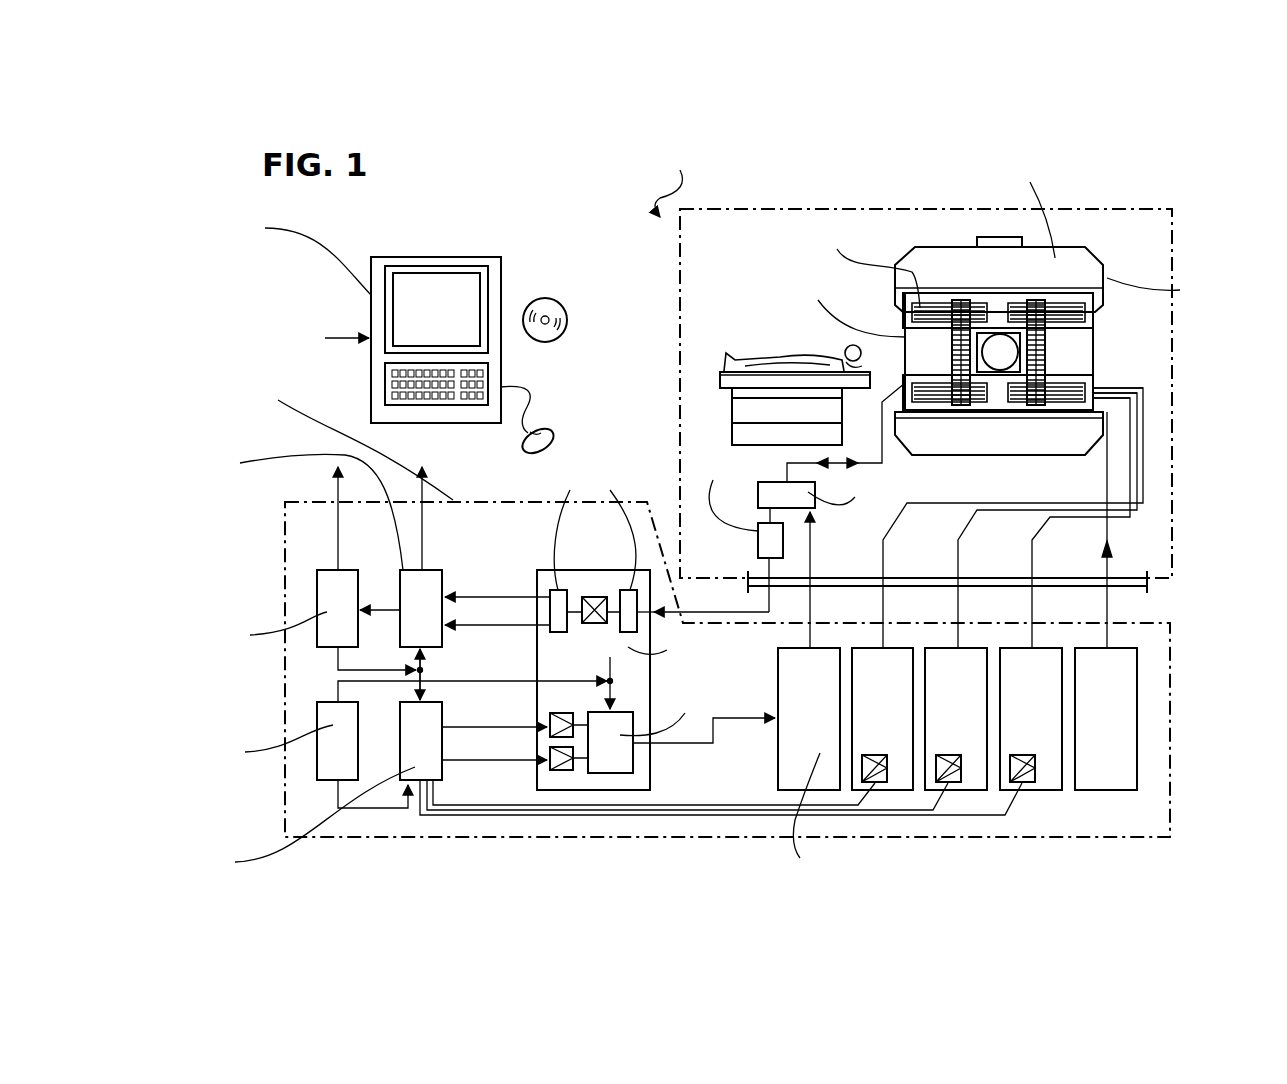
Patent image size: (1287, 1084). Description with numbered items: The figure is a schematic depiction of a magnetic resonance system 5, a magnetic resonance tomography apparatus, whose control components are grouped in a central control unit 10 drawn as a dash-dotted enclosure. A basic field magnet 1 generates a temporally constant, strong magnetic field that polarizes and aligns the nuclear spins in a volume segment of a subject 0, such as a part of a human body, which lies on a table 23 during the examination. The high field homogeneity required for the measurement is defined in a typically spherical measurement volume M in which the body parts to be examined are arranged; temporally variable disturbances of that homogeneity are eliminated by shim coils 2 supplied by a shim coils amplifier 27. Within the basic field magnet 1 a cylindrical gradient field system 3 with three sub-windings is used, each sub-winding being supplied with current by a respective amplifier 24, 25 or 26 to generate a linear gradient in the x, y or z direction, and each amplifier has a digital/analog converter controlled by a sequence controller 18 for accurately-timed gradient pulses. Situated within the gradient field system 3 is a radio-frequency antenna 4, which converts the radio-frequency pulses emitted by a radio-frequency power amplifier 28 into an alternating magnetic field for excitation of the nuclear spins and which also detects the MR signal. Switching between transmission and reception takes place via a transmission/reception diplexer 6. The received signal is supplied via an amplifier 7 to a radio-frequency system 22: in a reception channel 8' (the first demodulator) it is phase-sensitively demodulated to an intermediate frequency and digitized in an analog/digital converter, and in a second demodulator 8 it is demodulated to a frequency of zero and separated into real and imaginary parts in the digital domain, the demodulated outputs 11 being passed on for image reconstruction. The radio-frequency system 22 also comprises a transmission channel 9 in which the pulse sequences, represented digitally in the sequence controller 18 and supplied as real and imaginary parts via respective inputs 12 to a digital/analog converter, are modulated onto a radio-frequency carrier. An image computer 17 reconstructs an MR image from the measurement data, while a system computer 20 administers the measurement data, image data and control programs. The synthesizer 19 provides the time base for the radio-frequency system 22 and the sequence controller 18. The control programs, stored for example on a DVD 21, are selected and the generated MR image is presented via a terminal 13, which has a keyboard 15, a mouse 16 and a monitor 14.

The subject 0 is at (806, 353).
The basic field magnet 1 is at (1085, 268).
The shim coils 2 is at (1093, 288).
The gradient field system 3 is at (905, 313).
The radio-frequency antenna 4 is at (973, 362).
The magnetic resonance system 5 is at (637, 249).
The transmission/reception diplexer 6 is at (758, 493).
The amplifier 7 is at (758, 530).
The second demodulator 8 is at (555, 584).
The reception channel (first demodulator) 8' is at (627, 584).
The transmission channel 9 is at (620, 712).
The central control unit 10 is at (488, 501).
The demodulator output lines 11 is at (528, 625).
The inputs 12 is at (528, 760).
The terminal 13 is at (484, 257).
The monitor 14 is at (440, 283).
The keyboard 15 is at (385, 385).
The mouse 16 is at (552, 434).
The image computer 17 is at (432, 570).
The sequence controller 18 is at (589, 778).
The synthesizer 19 is at (327, 702).
The system computer 20 is at (352, 570).
The DVD 21 is at (545, 298).
The radio-frequency system 22 is at (593, 570).
The table 23 is at (733, 412).
The amplifier 24 is at (868, 655).
The amplifier 25 is at (935, 657).
The amplifier 26 is at (1008, 657).
The shim coils amplifier 27 is at (1092, 782).
The radio-frequency power amplifier 28 is at (797, 767).
The measurement volume M is at (1012, 352).